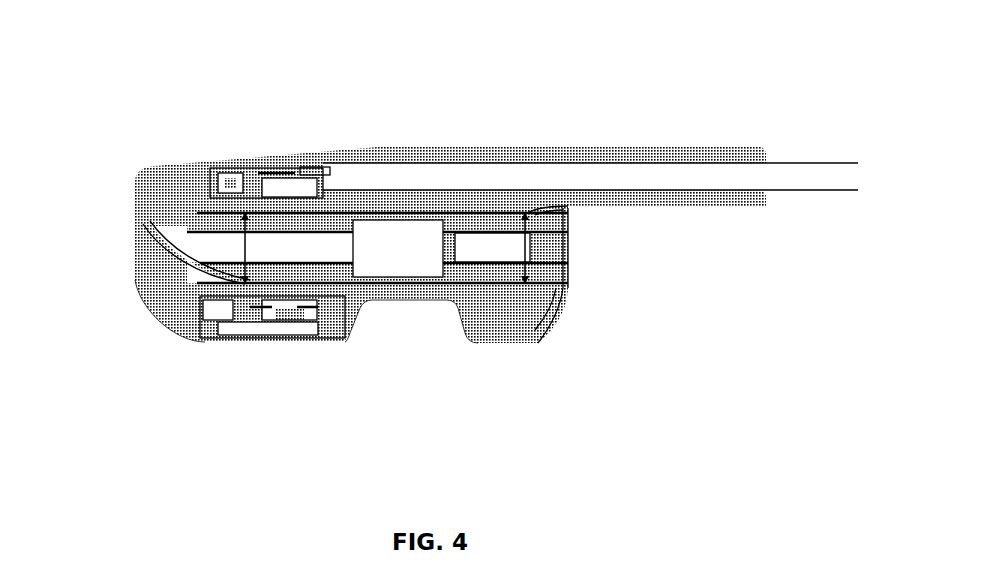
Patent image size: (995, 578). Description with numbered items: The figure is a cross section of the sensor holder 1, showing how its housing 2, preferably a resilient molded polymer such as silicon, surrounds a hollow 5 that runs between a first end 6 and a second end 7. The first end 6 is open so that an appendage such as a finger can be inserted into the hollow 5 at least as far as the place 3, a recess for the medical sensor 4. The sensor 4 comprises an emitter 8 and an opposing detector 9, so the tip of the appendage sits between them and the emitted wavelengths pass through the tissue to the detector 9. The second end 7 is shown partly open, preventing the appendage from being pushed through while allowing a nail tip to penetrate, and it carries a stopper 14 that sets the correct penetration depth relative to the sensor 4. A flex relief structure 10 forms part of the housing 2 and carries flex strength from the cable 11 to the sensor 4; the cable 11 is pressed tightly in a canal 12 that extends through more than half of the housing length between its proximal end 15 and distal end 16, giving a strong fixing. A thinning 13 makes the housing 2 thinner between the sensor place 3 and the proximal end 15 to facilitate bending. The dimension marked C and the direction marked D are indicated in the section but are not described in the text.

The sensor holder 1 is at (180, 153).
The housing 2 is at (176, 314).
The place for a medical sensor 3 is at (310, 165).
The medical sensor 4 is at (257, 170).
The hollow 5 is at (486, 257).
The first end 6 is at (565, 290).
The second end 7 is at (143, 224).
The emitter 8 is at (282, 172).
The detector 9 is at (292, 306).
The flex relief structure 10 is at (614, 154).
The cable 11 is at (790, 190).
The canal 12 is at (665, 200).
The thinning 13 is at (378, 303).
The stopper 14 is at (152, 247).
The proximal end 15 is at (570, 262).
The distal end 16 is at (136, 278).
The cavity height C is at (530, 247).
The direction D is at (240, 245).